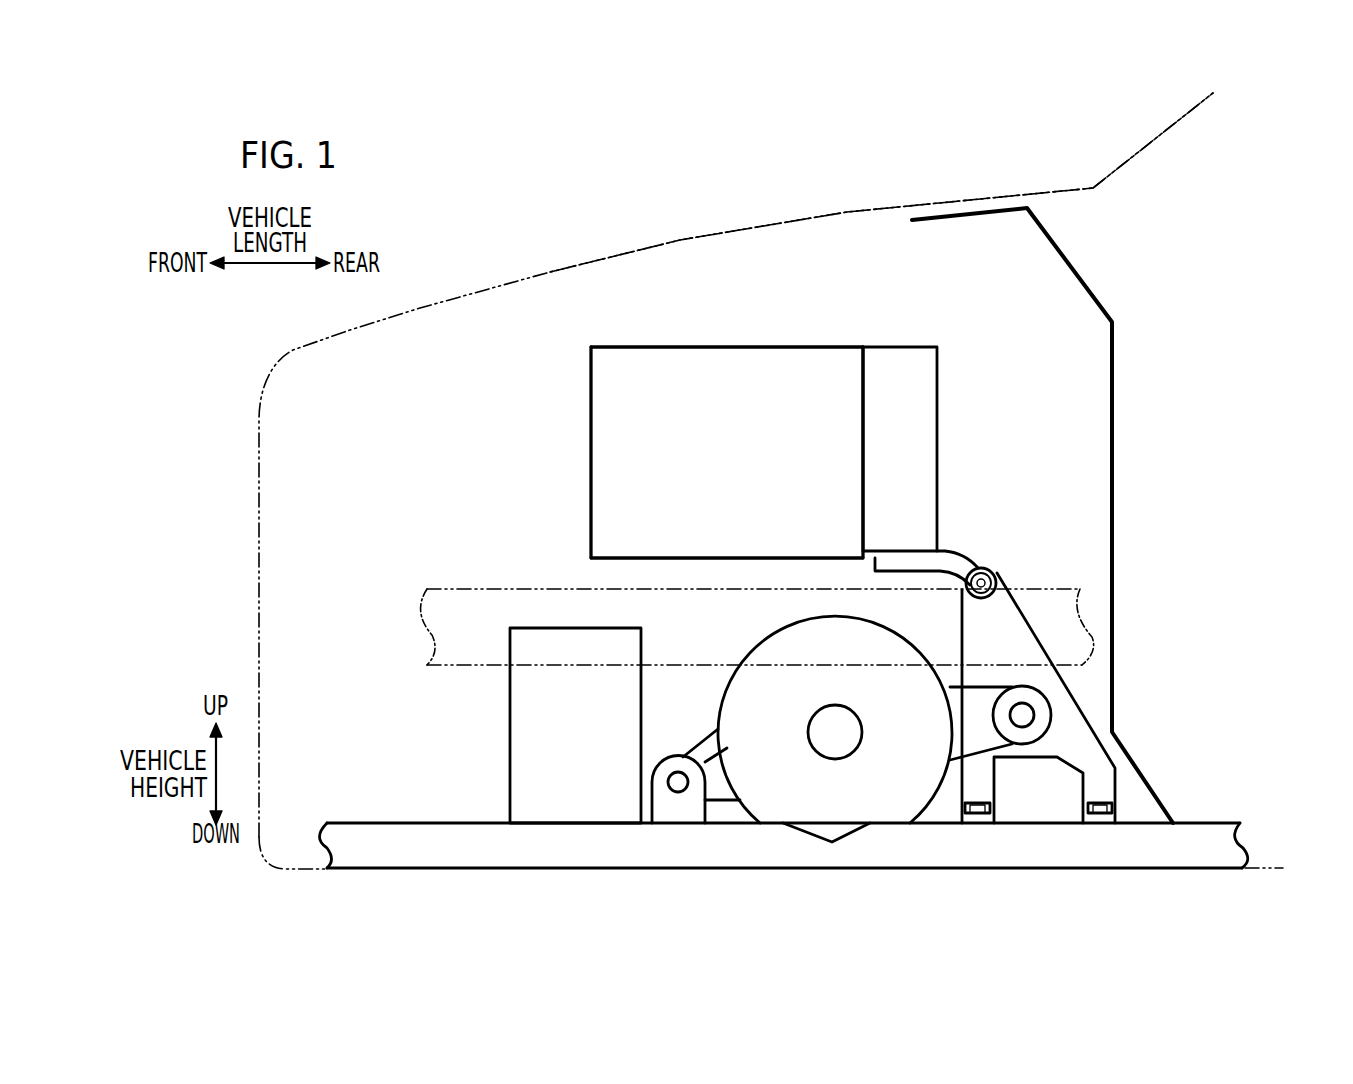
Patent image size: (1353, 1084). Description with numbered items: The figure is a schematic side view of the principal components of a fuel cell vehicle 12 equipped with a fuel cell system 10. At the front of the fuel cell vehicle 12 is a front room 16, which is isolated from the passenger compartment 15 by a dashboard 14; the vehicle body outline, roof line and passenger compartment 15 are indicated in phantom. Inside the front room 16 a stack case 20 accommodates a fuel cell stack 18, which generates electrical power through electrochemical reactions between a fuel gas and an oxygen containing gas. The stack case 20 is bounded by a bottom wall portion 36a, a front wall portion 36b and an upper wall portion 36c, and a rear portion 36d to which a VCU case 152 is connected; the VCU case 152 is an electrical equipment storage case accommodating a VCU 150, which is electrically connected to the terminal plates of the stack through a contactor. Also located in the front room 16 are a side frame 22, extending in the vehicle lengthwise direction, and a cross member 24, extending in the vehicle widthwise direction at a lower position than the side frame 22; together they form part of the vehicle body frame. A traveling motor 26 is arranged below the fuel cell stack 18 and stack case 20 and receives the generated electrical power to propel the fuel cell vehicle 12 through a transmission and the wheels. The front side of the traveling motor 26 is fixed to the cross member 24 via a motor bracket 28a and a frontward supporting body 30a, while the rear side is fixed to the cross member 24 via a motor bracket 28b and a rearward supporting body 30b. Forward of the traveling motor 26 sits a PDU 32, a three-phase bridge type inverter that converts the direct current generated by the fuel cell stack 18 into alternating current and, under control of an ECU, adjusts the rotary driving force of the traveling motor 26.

The fuel cell system 10 is at (584, 418).
The fuel cell vehicle 12 is at (266, 357).
The dashboard 14 is at (1112, 355).
The passenger compartment 15 is at (1158, 192).
The front room 16 is at (848, 248).
The fuel cell stack 18 is at (617, 468).
The stack case 20 is at (617, 516).
The side frame 22 is at (460, 602).
The cross member 24 is at (388, 833).
The traveling motor 26 is at (877, 810).
The motor bracket 28a is at (707, 752).
The motor bracket 28b is at (973, 711).
The frontward supporting body 30a is at (663, 798).
The rearward supporting body 30b is at (1068, 715).
The PDU 32 is at (510, 715).
The bottom wall portion 36a is at (697, 558).
The front wall portion 36b is at (591, 382).
The upper wall portion 36c is at (702, 347).
The rear portion 36d is at (865, 419).
The VCU 150 is at (900, 472).
The VCU case 152 is at (912, 347).